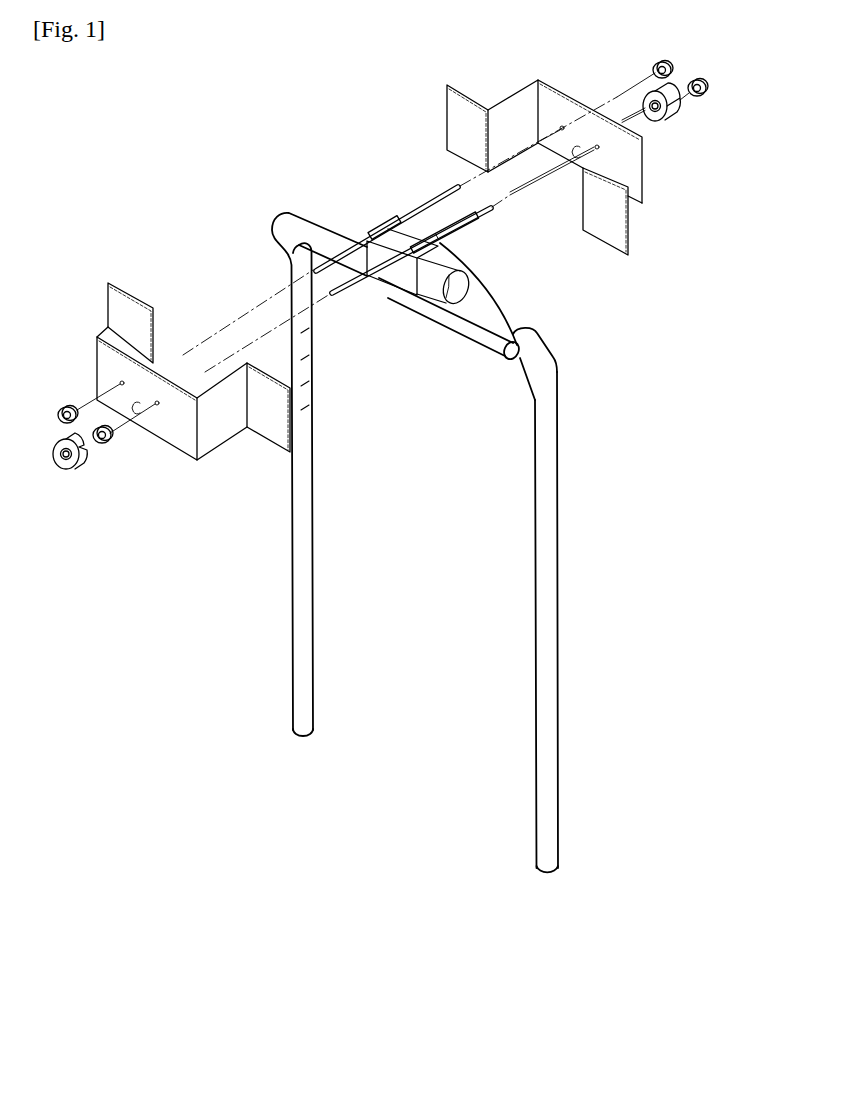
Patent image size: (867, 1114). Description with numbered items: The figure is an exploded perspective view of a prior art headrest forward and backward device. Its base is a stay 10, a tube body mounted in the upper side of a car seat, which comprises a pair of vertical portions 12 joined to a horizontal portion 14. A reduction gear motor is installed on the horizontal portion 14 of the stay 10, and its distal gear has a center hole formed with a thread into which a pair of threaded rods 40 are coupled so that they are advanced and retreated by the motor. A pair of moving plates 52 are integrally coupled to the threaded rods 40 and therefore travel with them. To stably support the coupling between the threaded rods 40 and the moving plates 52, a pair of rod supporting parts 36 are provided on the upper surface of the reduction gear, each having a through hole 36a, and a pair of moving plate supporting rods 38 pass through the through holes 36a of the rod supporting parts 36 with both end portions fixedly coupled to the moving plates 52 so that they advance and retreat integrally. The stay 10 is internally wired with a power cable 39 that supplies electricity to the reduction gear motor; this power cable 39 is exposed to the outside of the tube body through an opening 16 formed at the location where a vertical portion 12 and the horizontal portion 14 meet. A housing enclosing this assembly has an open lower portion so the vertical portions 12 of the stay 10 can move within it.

The stay 10 is at (269, 601).
The vertical portion 12 is at (557, 662).
The horizontal portion 14 is at (473, 340).
The opening 16 is at (533, 335).
The rod supporting part 36 is at (440, 243).
The through hole 36a is at (398, 268).
The moving plate supporting rod 38 is at (427, 203).
The power cable 39 is at (508, 313).
The threaded rod 40 is at (292, 271).
The moving plate 52 is at (637, 166).